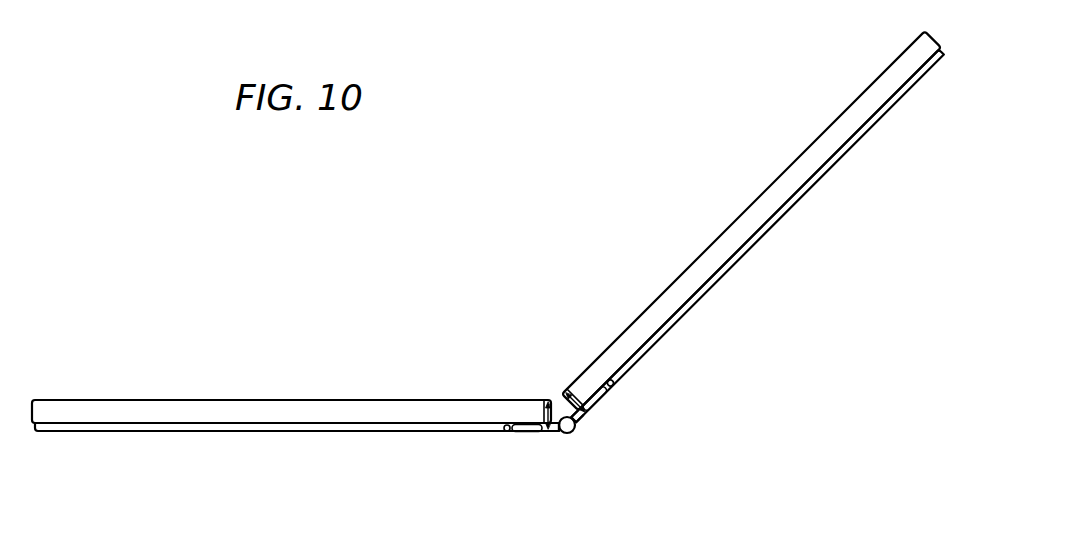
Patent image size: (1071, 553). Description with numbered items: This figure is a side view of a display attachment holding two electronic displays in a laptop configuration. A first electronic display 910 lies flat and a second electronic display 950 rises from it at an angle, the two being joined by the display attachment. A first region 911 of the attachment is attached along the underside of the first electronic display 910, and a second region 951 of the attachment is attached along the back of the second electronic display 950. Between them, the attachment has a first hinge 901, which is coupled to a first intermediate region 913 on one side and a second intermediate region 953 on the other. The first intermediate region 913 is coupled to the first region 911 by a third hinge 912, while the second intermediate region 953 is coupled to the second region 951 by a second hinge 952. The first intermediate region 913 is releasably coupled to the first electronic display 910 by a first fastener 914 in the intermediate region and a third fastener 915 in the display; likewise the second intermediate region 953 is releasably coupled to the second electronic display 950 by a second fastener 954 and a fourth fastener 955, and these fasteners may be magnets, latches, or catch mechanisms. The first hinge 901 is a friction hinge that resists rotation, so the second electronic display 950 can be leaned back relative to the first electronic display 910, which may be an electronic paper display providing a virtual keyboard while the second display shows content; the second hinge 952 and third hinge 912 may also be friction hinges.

The first hinge 901 is at (565, 434).
The first electronic display 910 is at (262, 413).
The first region 911 is at (267, 432).
The third hinge 912 is at (505, 431).
The first intermediate region 913 is at (527, 433).
The first fastener 914 is at (547, 433).
The third fastener 915 is at (543, 410).
The second electronic display 950 is at (777, 195).
The second region 951 is at (822, 173).
The second hinge 952 is at (614, 387).
The second intermediate region 953 is at (602, 400).
The second fastener 954 is at (577, 423).
The fourth fastener 955 is at (580, 398).